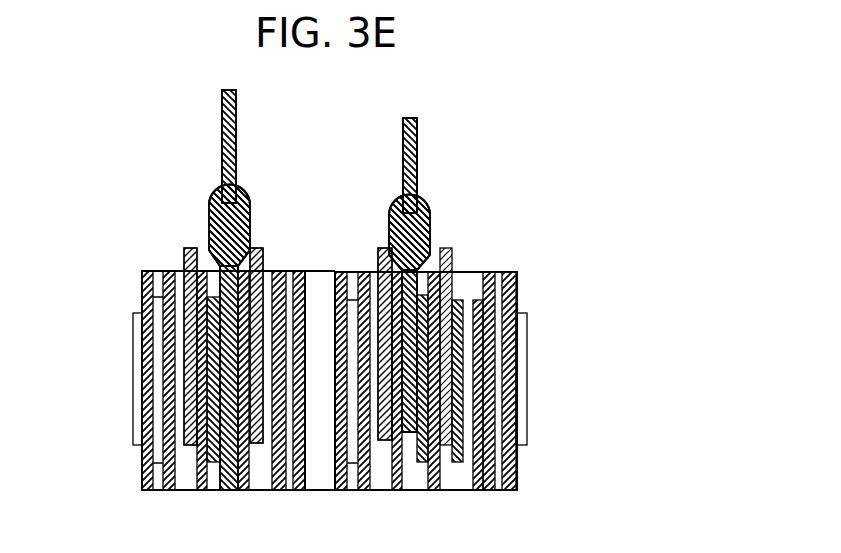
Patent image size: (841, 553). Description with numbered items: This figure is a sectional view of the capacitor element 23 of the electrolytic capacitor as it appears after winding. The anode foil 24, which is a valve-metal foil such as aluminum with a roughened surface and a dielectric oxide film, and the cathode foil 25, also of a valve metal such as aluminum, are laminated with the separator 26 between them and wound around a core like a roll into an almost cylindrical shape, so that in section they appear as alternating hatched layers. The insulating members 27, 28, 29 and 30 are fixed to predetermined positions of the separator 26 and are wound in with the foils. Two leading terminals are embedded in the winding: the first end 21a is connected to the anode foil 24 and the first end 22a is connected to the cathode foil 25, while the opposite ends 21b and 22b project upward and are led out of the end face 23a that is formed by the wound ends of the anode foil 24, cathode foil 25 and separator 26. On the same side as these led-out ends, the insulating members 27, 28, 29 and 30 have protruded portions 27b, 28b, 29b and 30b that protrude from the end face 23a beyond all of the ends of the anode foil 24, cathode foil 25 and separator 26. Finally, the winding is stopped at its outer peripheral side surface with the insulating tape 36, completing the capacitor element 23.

The capacitor element 23 is at (572, 148).
The end face 23a is at (493, 268).
The end of leading terminal 21a is at (223, 348).
The end of leading terminal 21b is at (210, 203).
The end of leading terminal 22a is at (420, 328).
The end of leading terminal 22b is at (420, 205).
The anode foil 24 is at (205, 490).
The cathode foil 25 is at (425, 410).
The separator 26 is at (160, 490).
The insulating member 27 is at (256, 435).
The protruded portion 27b is at (253, 266).
The insulating member 28 is at (388, 442).
The protruded portion 28b is at (380, 248).
The insulating member 29 is at (195, 396).
The protruded portion 29b is at (182, 250).
The insulating member 30 is at (448, 368).
The protruded portion 30b is at (448, 248).
The insulating tape 36 is at (170, 355).